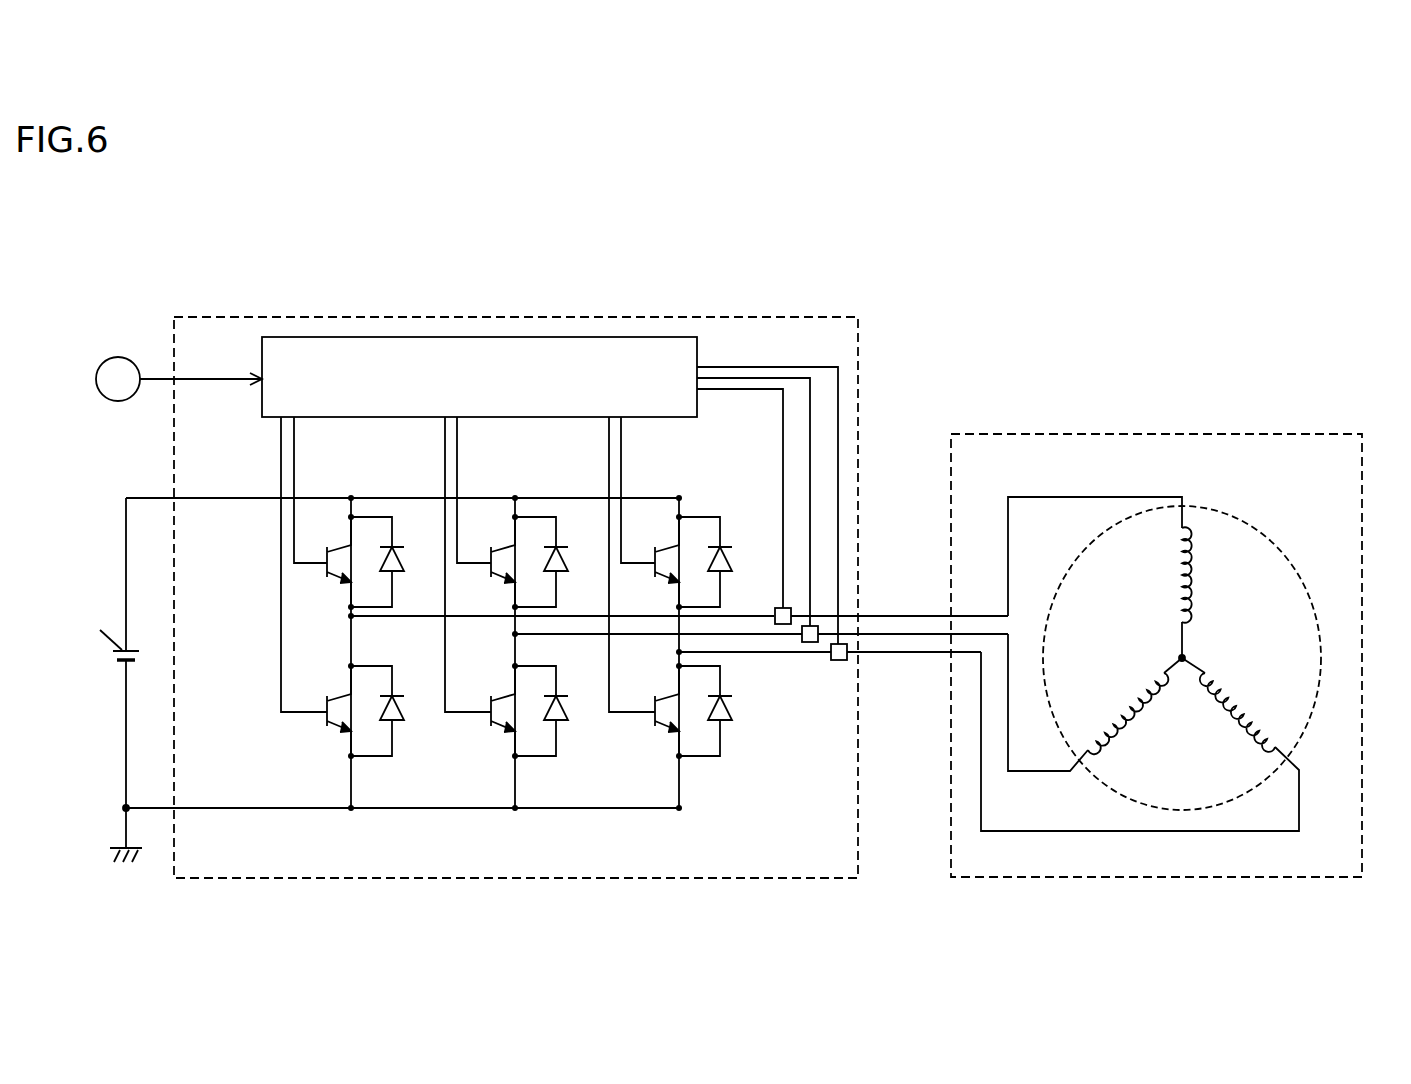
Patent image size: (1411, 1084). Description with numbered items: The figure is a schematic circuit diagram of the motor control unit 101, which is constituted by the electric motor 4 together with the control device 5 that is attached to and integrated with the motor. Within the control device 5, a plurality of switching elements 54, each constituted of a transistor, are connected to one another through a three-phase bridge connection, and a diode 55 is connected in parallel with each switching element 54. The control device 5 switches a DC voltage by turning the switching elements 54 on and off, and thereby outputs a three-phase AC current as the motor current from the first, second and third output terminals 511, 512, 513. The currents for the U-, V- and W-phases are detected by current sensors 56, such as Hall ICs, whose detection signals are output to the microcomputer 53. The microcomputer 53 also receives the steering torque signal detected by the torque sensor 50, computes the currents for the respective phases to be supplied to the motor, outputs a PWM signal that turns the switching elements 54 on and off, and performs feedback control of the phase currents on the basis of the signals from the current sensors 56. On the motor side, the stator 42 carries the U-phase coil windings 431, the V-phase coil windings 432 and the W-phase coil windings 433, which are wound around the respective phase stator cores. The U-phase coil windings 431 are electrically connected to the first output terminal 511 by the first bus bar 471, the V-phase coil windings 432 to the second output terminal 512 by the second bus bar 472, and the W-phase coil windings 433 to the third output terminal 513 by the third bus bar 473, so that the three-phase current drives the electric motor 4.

The motor control unit (MCU) 101 is at (1334, 336).
The electric motor 4 is at (1315, 434).
The stator 42 is at (1276, 549).
The U-phase coil windings 431 is at (1189, 593).
The V-phase coil windings 432 is at (1152, 703).
The W-phase coil windings 433 is at (1253, 713).
The first bus bar 471 is at (1052, 496).
The second bus bar 472 is at (1029, 774).
The third bus bar 473 is at (1063, 833).
The control device 5 is at (793, 314).
The torque sensor 50 is at (104, 358).
The microcomputer 53 is at (487, 388).
The switching elements 54 is at (340, 547).
The diode 55 is at (392, 573).
The current sensors 56 is at (831, 656).
The first output terminal 511 is at (868, 613).
The second output terminal 512 is at (903, 632).
The third output terminal 513 is at (871, 654).